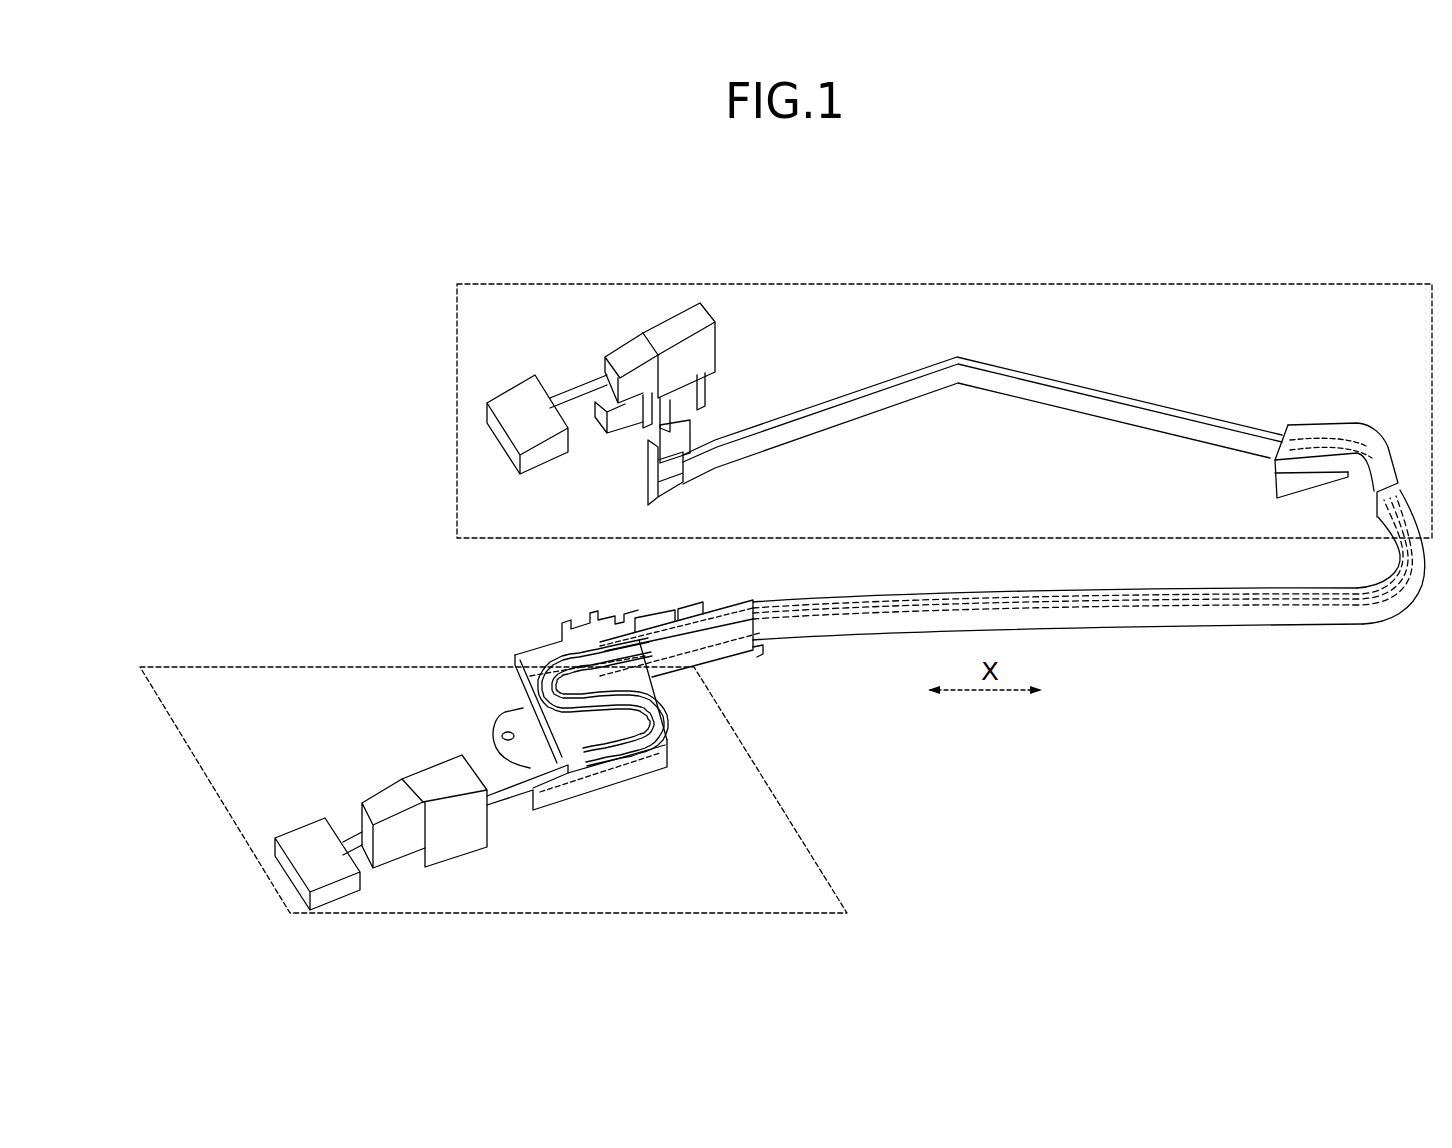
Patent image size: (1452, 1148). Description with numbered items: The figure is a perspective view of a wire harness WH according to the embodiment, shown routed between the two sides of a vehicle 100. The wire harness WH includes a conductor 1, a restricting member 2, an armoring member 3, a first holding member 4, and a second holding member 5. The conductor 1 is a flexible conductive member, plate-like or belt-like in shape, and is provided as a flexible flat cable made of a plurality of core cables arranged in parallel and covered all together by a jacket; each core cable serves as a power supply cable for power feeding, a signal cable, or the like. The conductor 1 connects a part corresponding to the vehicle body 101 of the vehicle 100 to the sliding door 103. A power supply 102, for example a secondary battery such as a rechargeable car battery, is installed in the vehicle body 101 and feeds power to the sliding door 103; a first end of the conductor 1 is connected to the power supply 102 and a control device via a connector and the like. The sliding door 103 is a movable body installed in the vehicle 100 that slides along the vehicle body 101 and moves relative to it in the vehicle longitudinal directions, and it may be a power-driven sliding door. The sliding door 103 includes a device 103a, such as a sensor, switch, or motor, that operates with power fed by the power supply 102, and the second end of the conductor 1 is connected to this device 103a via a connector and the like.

The vehicle 100 is at (410, 297).
The wire harness WH is at (728, 266).
The sliding door 103 is at (1257, 283).
The device 103a is at (495, 393).
The second holding member 5 is at (1337, 412).
The conductor 1 is at (1158, 600).
The restricting member 2 is at (980, 597).
The armoring member 3 is at (866, 600).
The first holding member 4 is at (580, 612).
The vehicle body 101 is at (343, 665).
The power supply 102 is at (297, 822).